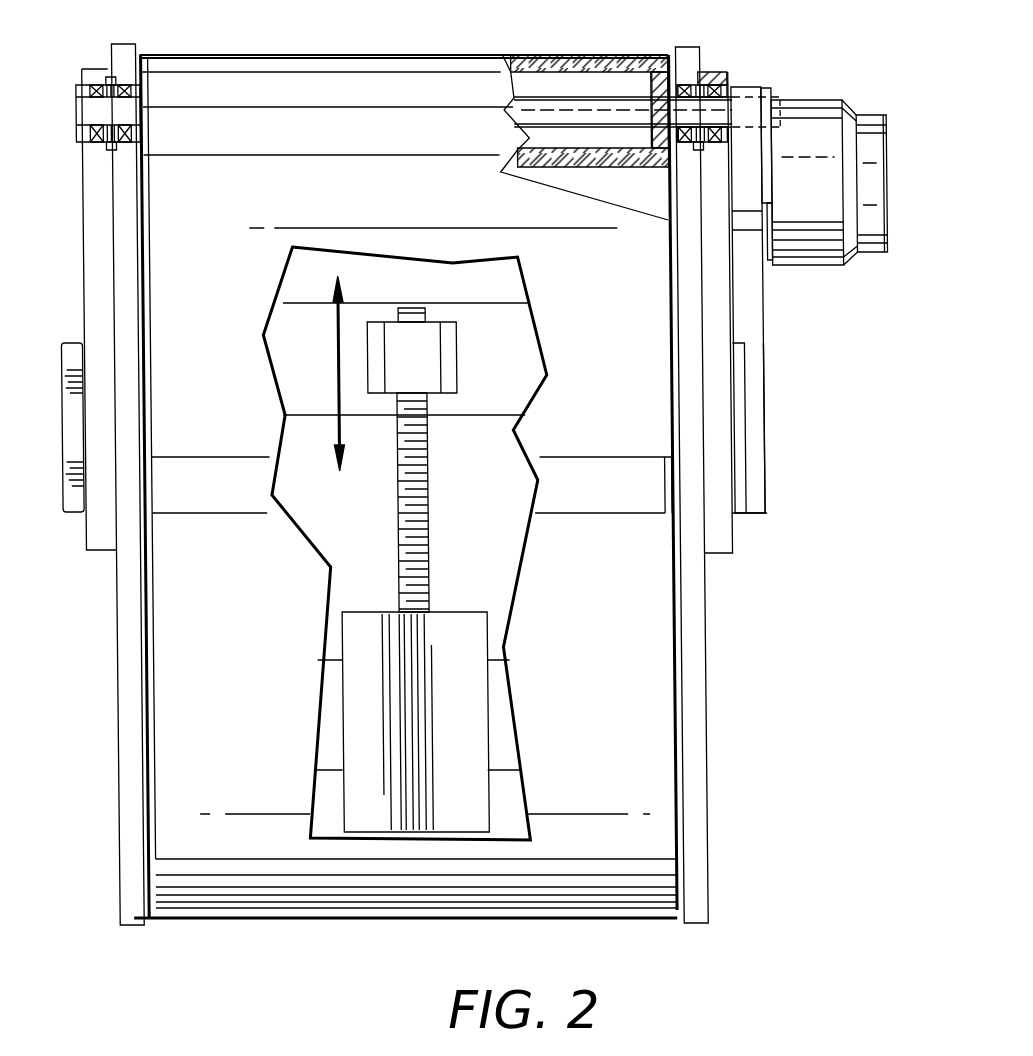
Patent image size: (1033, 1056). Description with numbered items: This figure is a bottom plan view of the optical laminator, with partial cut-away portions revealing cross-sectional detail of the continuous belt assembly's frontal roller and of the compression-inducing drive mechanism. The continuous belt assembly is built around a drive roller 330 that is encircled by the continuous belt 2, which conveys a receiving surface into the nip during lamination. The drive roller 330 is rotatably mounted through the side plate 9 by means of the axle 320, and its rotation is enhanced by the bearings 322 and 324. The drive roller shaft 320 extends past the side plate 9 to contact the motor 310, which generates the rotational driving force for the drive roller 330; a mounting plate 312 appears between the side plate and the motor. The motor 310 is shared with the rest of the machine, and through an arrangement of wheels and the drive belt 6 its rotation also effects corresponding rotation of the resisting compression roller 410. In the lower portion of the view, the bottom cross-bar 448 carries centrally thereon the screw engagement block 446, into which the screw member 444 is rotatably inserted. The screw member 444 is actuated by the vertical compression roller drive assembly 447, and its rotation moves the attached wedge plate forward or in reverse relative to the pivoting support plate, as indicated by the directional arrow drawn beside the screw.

The continuous belt 2 is at (308, 65).
The drive belt 6 is at (92, 210).
The side plate 9 is at (120, 275).
The motor 310 is at (808, 107).
The mounting plate 312 is at (768, 90).
The axle 320 is at (565, 100).
The bearing 322 is at (677, 140).
The bearing 324 is at (712, 147).
The drive roller 330 is at (645, 55).
The resisting compression roller 410 is at (661, 513).
The screw member 444 is at (430, 440).
The screw engagement block 446 is at (433, 330).
The vertical compression roller drive assembly 447 is at (478, 803).
The bottom cross-bar 448 is at (523, 348).